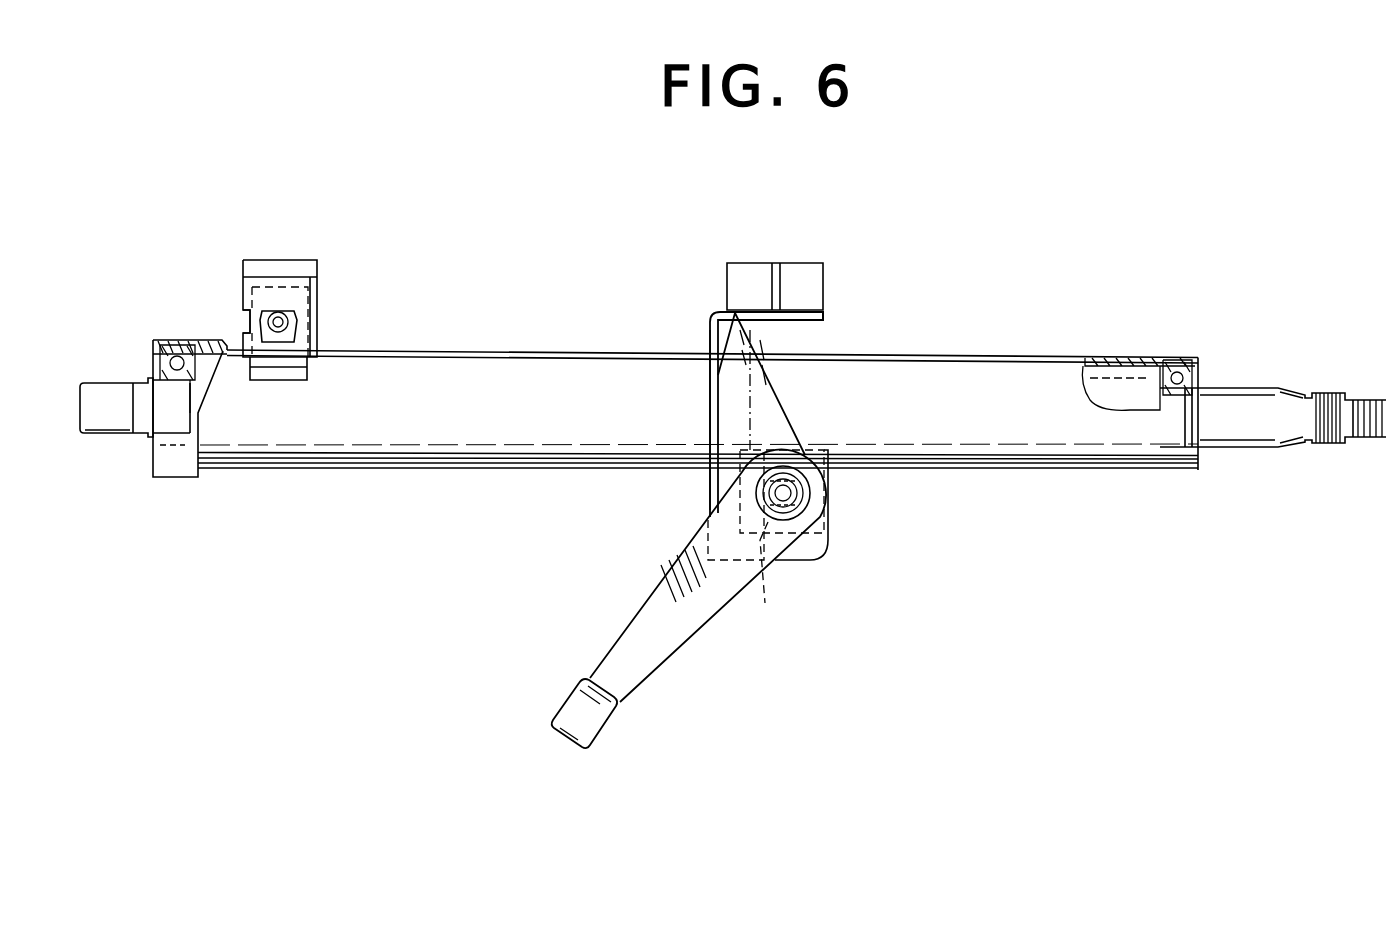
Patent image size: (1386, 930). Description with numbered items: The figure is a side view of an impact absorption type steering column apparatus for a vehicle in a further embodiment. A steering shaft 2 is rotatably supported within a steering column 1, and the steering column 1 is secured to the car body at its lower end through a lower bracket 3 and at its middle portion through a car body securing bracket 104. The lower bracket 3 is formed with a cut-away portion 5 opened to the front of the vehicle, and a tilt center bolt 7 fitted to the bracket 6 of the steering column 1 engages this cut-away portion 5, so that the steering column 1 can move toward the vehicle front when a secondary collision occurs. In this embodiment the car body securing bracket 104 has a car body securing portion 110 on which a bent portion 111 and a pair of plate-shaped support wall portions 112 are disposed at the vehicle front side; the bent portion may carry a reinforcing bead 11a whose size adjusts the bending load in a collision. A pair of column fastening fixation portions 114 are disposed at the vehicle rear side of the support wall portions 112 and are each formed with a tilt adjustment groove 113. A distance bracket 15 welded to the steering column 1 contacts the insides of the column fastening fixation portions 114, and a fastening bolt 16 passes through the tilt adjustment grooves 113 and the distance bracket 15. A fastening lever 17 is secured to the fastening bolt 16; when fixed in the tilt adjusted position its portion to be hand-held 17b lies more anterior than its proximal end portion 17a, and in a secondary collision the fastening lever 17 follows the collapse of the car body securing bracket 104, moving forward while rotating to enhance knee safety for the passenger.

The steering column 1 is at (962, 353).
The steering shaft 2 is at (1240, 386).
The lower bracket 3 is at (315, 262).
The cut-away portion 5 is at (243, 320).
The bracket 6 is at (307, 370).
The tilt center bolt 7 is at (276, 310).
The car body securing bracket 104 is at (710, 298).
The car body securing portion 110 is at (790, 310).
The bent portion 111 is at (708, 318).
The plate-shaped support wall portion 112 is at (707, 392).
The reinforcing bead 11a is at (745, 325).
The tilt adjustment groove 113 is at (781, 577).
The column fastening fixation portion 114 is at (817, 561).
The distance bracket 15 is at (830, 523).
The fastening bolt 16 is at (797, 490).
The fastening lever 17 is at (638, 600).
The proximal end portion 17a is at (776, 447).
The portion to be hand-held 17b is at (577, 693).